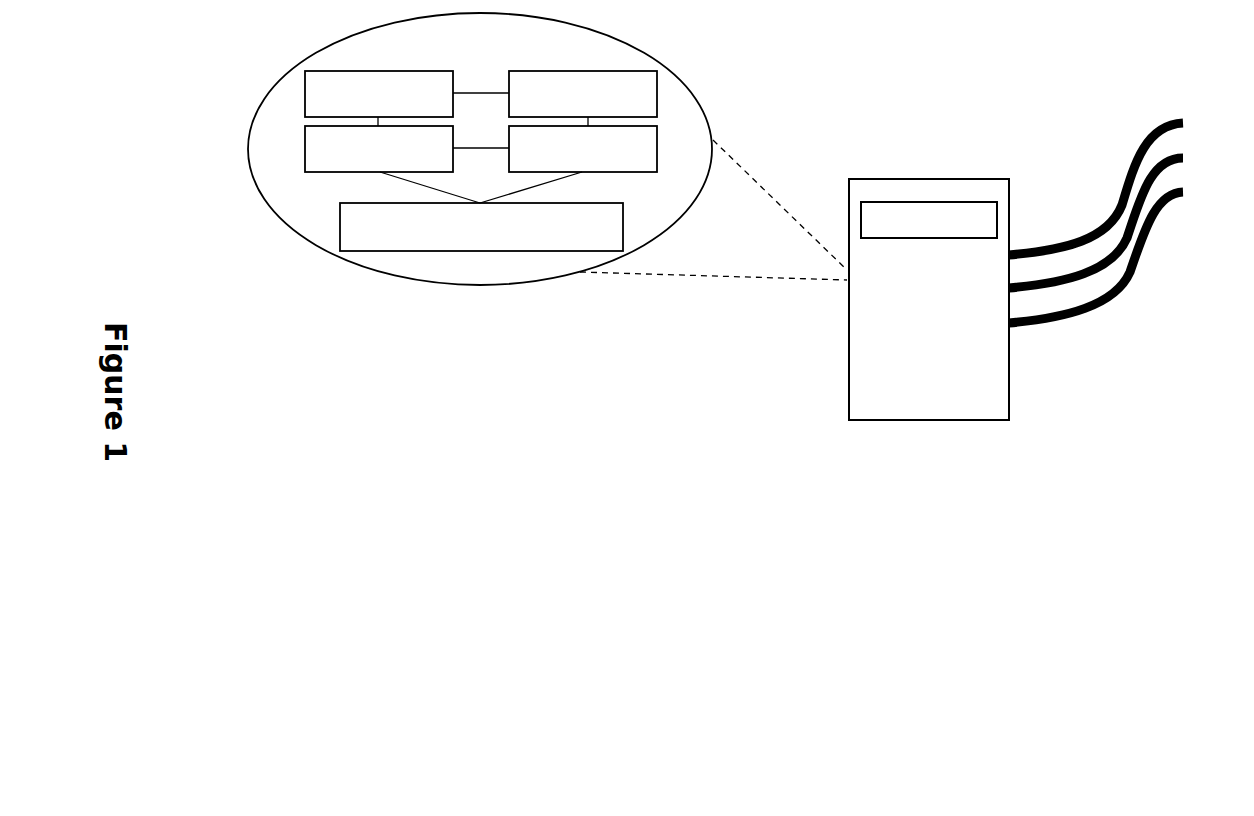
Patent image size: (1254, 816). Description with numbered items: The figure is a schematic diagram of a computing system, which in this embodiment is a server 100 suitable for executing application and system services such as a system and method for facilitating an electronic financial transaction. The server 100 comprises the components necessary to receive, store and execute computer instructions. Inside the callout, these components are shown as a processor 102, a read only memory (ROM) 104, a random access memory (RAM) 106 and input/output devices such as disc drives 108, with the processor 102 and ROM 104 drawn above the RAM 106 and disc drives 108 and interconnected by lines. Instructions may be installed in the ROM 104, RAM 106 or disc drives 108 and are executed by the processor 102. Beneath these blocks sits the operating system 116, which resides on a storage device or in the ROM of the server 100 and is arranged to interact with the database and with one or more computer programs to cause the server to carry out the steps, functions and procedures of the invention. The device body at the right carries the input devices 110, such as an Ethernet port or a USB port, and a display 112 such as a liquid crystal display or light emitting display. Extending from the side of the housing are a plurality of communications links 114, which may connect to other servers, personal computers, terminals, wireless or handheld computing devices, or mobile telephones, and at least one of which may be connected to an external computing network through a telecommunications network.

The server 100 is at (845, 328).
The processor 102 is at (407, 98).
The read only memory (ROM) 104 is at (407, 164).
The random access memory (RAM) 106 is at (583, 98).
The disc drives 108 is at (568, 164).
The input devices 110 is at (1013, 397).
The display 112 is at (931, 198).
The communications links 114 is at (1131, 223).
The operating system 116 is at (481, 227).